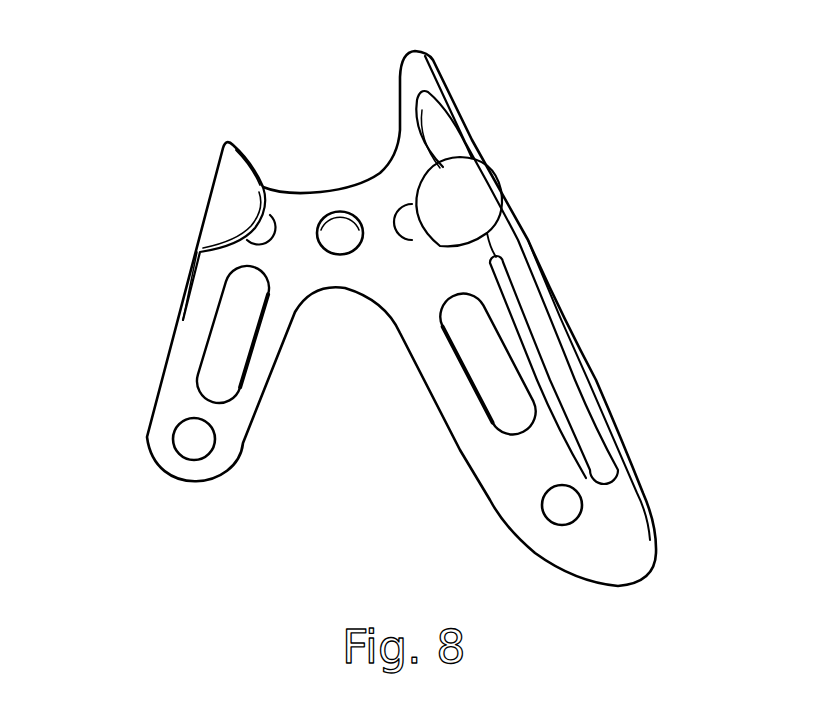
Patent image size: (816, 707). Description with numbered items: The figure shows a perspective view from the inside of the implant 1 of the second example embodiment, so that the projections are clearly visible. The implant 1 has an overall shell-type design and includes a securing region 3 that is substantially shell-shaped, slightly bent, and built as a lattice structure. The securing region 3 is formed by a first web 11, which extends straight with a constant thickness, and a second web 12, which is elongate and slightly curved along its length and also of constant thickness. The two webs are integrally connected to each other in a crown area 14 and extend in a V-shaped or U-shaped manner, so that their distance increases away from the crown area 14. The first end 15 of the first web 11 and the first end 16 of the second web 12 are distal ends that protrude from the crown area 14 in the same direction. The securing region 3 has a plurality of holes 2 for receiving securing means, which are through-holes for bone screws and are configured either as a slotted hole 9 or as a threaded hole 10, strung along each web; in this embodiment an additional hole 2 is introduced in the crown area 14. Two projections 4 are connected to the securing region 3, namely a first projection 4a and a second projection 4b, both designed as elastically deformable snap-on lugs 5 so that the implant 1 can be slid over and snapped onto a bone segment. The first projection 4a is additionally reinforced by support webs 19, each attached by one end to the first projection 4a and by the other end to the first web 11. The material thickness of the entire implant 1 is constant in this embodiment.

The implant 1 is at (402, 308).
The holes for receiving securing means 2 is at (354, 346).
The securing region 3 is at (400, 300).
The projections 4 is at (321, 212).
The first projection 4a is at (477, 192).
The second projection 4b is at (233, 195).
The snap-on lugs 5 is at (327, 205).
The slotted hole 9 is at (233, 315).
The threaded hole 10 is at (412, 220).
The first web 11 is at (537, 453).
The second web 12 is at (180, 373).
The crown area 14 is at (343, 262).
The first end of the first web 15 is at (661, 557).
The first end of the second web 16 is at (186, 498).
The support webs 19 is at (423, 65).